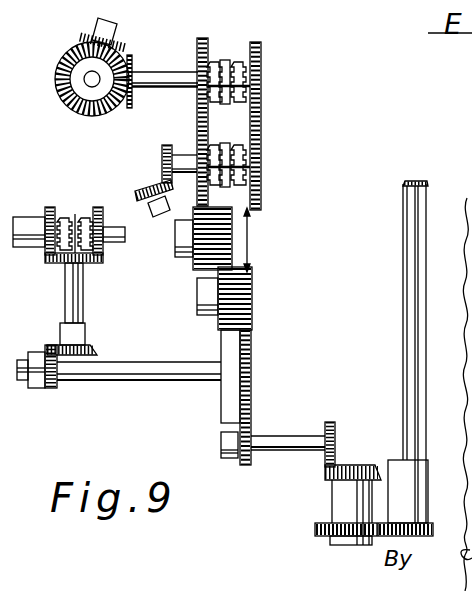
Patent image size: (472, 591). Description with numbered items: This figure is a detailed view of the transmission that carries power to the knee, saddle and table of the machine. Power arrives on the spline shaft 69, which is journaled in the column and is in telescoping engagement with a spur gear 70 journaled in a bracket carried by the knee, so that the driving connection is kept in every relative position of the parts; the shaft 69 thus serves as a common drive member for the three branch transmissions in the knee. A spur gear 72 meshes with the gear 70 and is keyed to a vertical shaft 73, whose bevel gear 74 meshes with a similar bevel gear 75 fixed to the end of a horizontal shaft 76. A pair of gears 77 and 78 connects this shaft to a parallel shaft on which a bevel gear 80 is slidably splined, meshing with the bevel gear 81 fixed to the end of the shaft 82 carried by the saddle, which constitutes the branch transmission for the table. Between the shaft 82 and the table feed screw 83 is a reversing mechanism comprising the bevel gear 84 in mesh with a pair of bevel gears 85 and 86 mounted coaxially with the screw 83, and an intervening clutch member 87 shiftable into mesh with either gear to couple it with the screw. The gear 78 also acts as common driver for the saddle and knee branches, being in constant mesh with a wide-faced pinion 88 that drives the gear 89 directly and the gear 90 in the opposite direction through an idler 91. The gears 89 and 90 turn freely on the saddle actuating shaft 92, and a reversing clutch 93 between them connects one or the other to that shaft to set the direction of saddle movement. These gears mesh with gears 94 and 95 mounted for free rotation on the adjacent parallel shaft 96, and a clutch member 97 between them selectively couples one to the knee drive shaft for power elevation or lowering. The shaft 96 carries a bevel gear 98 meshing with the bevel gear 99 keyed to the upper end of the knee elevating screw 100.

The spline shaft 69 is at (417, 217).
The spur gear 70 is at (433, 527).
The spur gear 72 is at (314, 536).
The vertical shaft 73 is at (340, 499).
The bevel gear 74 is at (374, 448).
The bevel gear 75 is at (336, 426).
The horizontal shaft 76 is at (297, 421).
The gear 77 is at (250, 431).
The gear 78 is at (251, 389).
The bevel gear 80 is at (55, 389).
The bevel gear 81 is at (93, 350).
The shaft 82 is at (83, 305).
The table feed screw 83 is at (113, 243).
The bevel gear 84 is at (86, 264).
The bevel gear 85 is at (52, 206).
The bevel gear 86 is at (112, 187).
The clutch member 87 is at (68, 218).
The wide-faced pinion 88 is at (252, 321).
The gear 89 is at (181, 354).
The gear 90 is at (207, 208).
The idler 91 is at (230, 250).
The saddle actuating shaft 92 is at (176, 160).
The reversing clutch 93 is at (235, 124).
The gear 94 is at (210, 20).
The gear 95 is at (261, 47).
The shaft 96 is at (179, 62).
The clutch member 97 is at (219, 62).
The bevel gear 98 is at (131, 108).
The bevel gear 99 is at (62, 62).
The knee elevating screw 100 is at (89, 82).